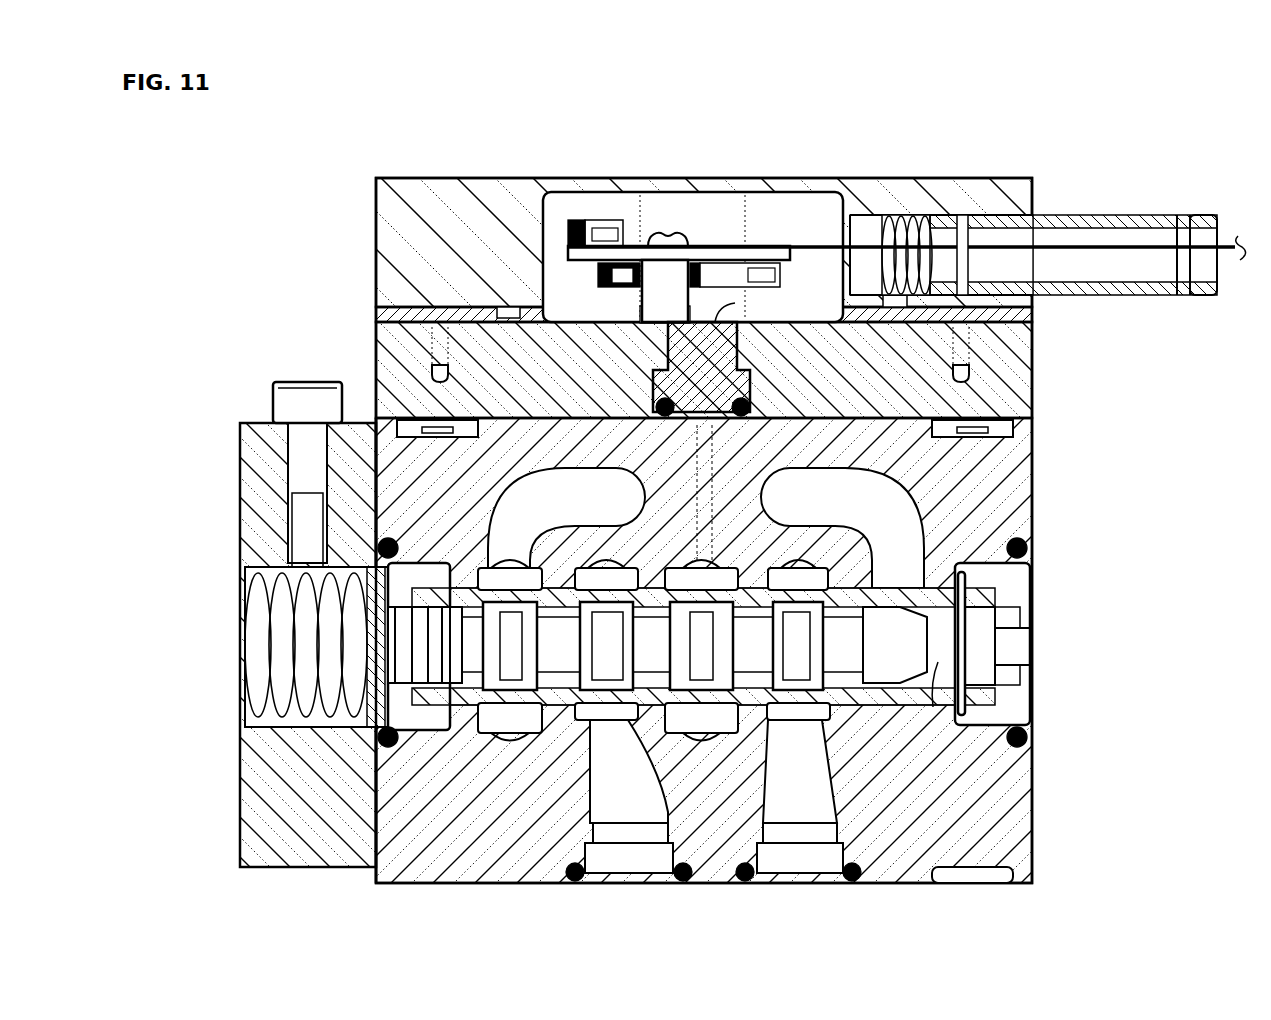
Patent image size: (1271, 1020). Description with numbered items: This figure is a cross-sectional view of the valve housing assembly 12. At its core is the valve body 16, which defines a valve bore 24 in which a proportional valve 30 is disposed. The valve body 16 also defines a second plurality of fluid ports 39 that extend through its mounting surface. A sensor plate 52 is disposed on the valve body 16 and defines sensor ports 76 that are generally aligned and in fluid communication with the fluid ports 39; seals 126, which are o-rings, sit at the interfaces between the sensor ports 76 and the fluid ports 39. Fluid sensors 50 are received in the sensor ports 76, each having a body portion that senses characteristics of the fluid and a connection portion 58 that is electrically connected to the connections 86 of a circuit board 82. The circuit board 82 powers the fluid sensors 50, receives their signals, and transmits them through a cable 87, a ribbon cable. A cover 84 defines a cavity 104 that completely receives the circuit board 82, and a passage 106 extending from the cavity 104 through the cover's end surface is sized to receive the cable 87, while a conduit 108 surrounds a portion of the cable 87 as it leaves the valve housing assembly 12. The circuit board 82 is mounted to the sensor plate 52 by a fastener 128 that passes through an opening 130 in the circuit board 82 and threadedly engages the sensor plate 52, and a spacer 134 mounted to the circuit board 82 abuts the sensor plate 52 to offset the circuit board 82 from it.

The valve housing assembly 12 is at (247, 290).
The valve body 16 is at (1035, 787).
The valve bore 24 is at (957, 715).
The valve 30 is at (1040, 590).
The second plurality of fluid ports 39 is at (718, 484).
The fluid sensors 50 is at (688, 378).
The sensor plate 52 is at (372, 345).
The connection portion 58 is at (753, 306).
The sensor ports 76 is at (747, 367).
The circuit board 82 is at (772, 243).
The cover 84 is at (372, 243).
The connections 86 is at (781, 281).
The cable 87 is at (1040, 250).
The cavity 104 is at (712, 196).
The passage 106 is at (867, 238).
The conduit 108 is at (1093, 203).
The seals 126 is at (657, 408).
The fastener 128 is at (637, 298).
The opening 130 is at (637, 317).
The spacer 134 is at (372, 315).